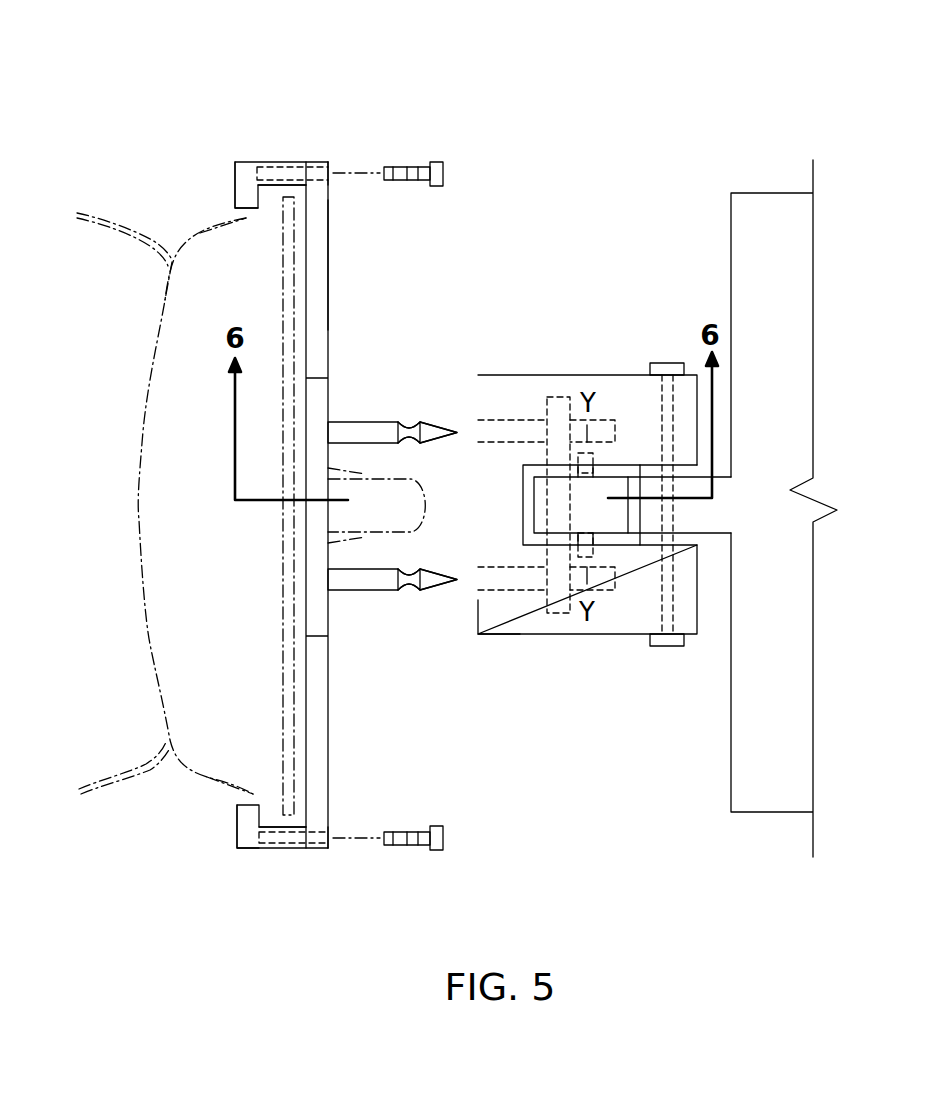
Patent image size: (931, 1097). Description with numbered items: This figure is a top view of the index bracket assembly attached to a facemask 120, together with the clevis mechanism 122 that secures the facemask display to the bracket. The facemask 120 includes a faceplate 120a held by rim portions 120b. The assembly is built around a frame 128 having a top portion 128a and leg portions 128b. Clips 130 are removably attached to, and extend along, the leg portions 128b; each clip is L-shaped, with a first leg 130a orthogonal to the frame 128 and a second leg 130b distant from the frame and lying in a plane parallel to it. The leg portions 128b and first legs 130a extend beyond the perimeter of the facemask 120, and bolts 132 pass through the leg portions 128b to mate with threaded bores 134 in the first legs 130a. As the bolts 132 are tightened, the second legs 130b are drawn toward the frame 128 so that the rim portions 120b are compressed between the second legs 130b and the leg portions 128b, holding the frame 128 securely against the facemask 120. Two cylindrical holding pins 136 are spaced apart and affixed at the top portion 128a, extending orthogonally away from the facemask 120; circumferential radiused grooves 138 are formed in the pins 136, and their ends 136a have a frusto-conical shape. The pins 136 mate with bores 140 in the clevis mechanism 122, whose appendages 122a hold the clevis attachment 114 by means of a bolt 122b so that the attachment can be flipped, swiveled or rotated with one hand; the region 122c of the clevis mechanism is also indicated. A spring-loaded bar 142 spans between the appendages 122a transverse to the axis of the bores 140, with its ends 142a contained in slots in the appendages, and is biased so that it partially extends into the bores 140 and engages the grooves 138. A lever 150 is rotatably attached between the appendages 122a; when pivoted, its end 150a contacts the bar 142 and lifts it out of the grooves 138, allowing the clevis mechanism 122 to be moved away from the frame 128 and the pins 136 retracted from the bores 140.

The clevis attachment 114 is at (731, 217).
The facemask 120 is at (139, 539).
The faceplate 120a is at (280, 262).
The rim portions 120b is at (245, 217).
The clevis mechanism 122 is at (593, 374).
The clevis appendages 122a is at (627, 375).
The bolt 122b is at (678, 647).
The block bottom corner 122c is at (490, 636).
The frame 128 is at (295, 569).
The top portion 128a is at (329, 264).
The leg portions 128b is at (315, 163).
The clips 130 is at (270, 162).
The first legs 130a is at (291, 163).
The second legs 130b is at (236, 170).
The bolts 132 is at (437, 162).
The threaded bores 134 is at (253, 163).
The holding pins 136 is at (362, 568).
The ends 136a is at (434, 425).
The radiused grooves 138 is at (410, 427).
The bores 140 is at (500, 420).
The spring-loaded bar 142 is at (547, 453).
The ends 142a is at (557, 397).
The lever 150 is at (617, 538).
The end 150a is at (533, 512).